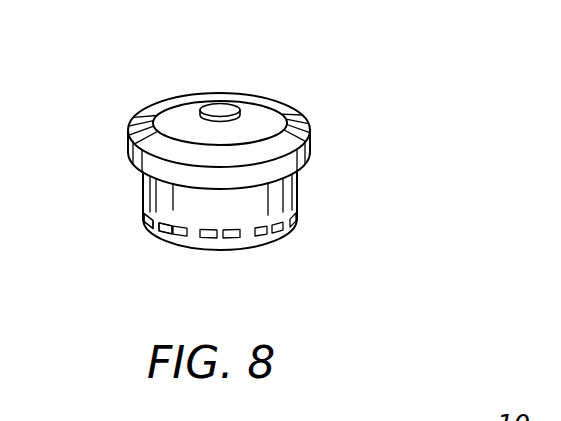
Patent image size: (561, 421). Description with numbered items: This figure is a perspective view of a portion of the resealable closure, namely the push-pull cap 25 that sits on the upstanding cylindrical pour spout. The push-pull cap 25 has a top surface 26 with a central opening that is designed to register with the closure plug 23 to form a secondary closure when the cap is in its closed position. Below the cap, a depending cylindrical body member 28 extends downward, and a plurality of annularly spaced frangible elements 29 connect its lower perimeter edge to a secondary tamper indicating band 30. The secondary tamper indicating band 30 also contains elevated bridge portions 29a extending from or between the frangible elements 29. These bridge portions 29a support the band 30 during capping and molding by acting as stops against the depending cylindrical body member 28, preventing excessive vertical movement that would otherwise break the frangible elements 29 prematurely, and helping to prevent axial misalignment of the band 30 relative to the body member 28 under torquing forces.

The closure plug 23 is at (220, 106).
The push-pull cap 25 is at (305, 131).
The top surface 26 is at (260, 113).
The depending cylindrical body member 28 is at (299, 188).
The frangible elements 29 is at (250, 238).
The elevated bridge portions 29a is at (171, 232).
The secondary tamper indicating band 30 is at (282, 248).